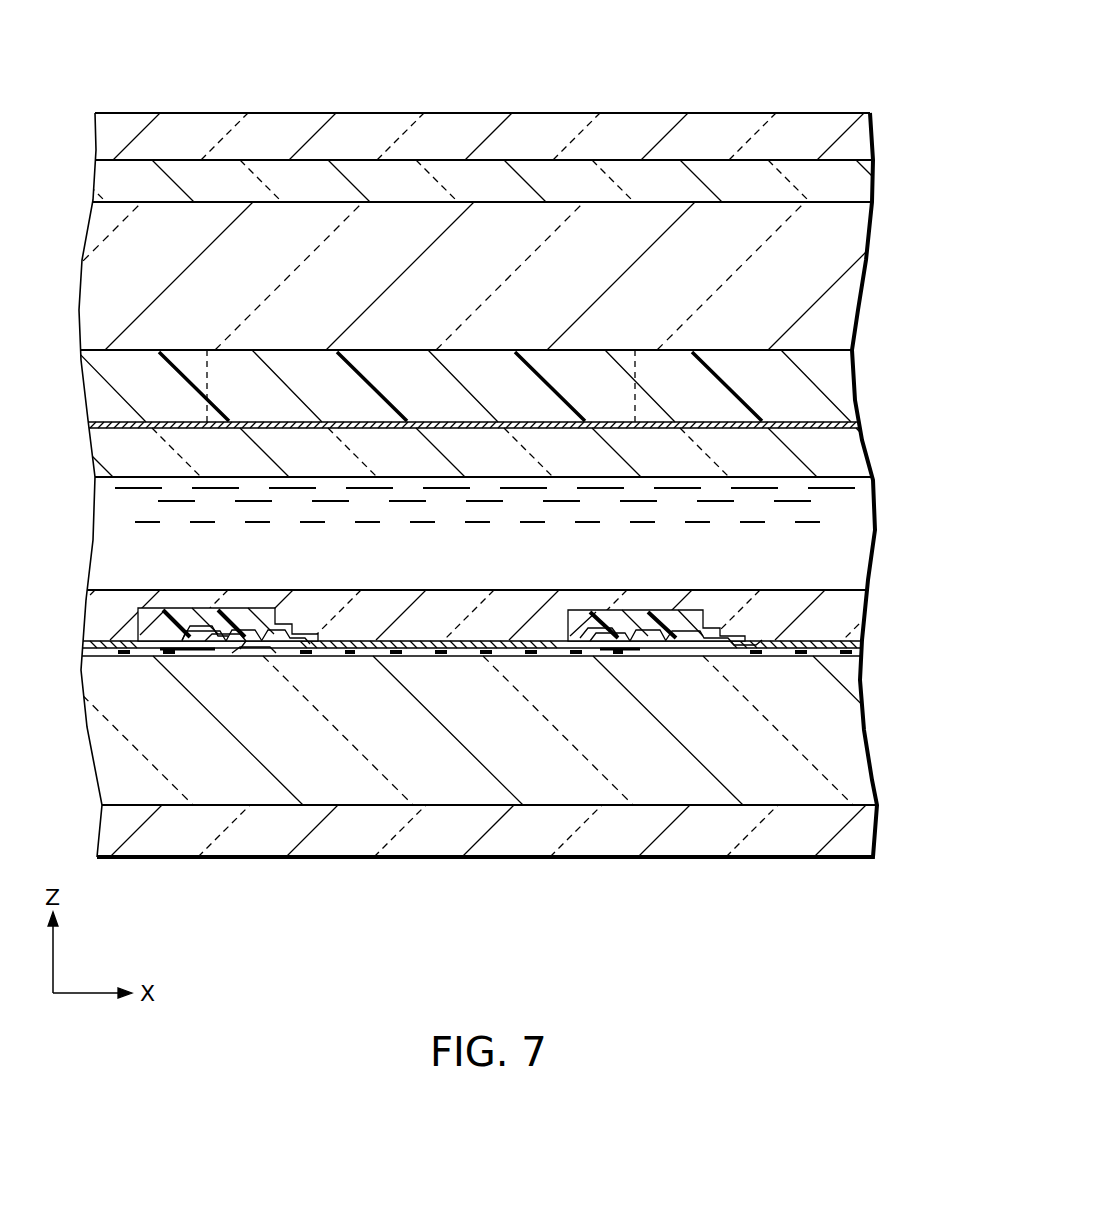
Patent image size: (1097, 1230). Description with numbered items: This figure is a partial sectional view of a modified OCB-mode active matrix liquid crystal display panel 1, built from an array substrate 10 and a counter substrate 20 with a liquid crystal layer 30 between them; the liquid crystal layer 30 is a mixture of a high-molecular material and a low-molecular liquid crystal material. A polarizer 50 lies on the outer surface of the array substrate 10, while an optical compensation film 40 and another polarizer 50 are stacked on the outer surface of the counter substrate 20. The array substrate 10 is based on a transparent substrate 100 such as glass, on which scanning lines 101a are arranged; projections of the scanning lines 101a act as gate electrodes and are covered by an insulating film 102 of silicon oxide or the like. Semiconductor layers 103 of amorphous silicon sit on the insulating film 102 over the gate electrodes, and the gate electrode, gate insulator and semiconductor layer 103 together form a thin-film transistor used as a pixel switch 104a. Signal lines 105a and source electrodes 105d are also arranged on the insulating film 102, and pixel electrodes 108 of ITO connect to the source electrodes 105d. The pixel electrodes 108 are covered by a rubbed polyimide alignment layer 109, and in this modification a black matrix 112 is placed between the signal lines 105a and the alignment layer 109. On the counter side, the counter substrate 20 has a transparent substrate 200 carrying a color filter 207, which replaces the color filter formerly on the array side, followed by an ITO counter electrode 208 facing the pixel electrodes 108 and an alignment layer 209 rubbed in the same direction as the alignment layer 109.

The liquid crystal display panel 1 is at (778, 83).
The array substrate 10 is at (481, 774).
The counter substrate 20 is at (513, 268).
The liquid crystal layer 30 is at (850, 540).
The optical compensation film 40 is at (848, 192).
The polarizer 50 is at (855, 147).
The transparent substrate 100 is at (788, 780).
The scanning line 101a is at (245, 657).
The insulating film 102 is at (470, 657).
The semiconductor layer 103 is at (286, 657).
The pixel switch 104a is at (263, 662).
The signal line 105a is at (185, 657).
The source electrode 105d is at (335, 657).
The pixel electrode 108 is at (435, 657).
The alignment layer 109 is at (551, 620).
The black matrix 112 is at (140, 657).
The transparent substrate 200 is at (640, 228).
The color filter 207 is at (475, 378).
The counter electrode 208 is at (315, 415).
The alignment layer 209 is at (235, 445).